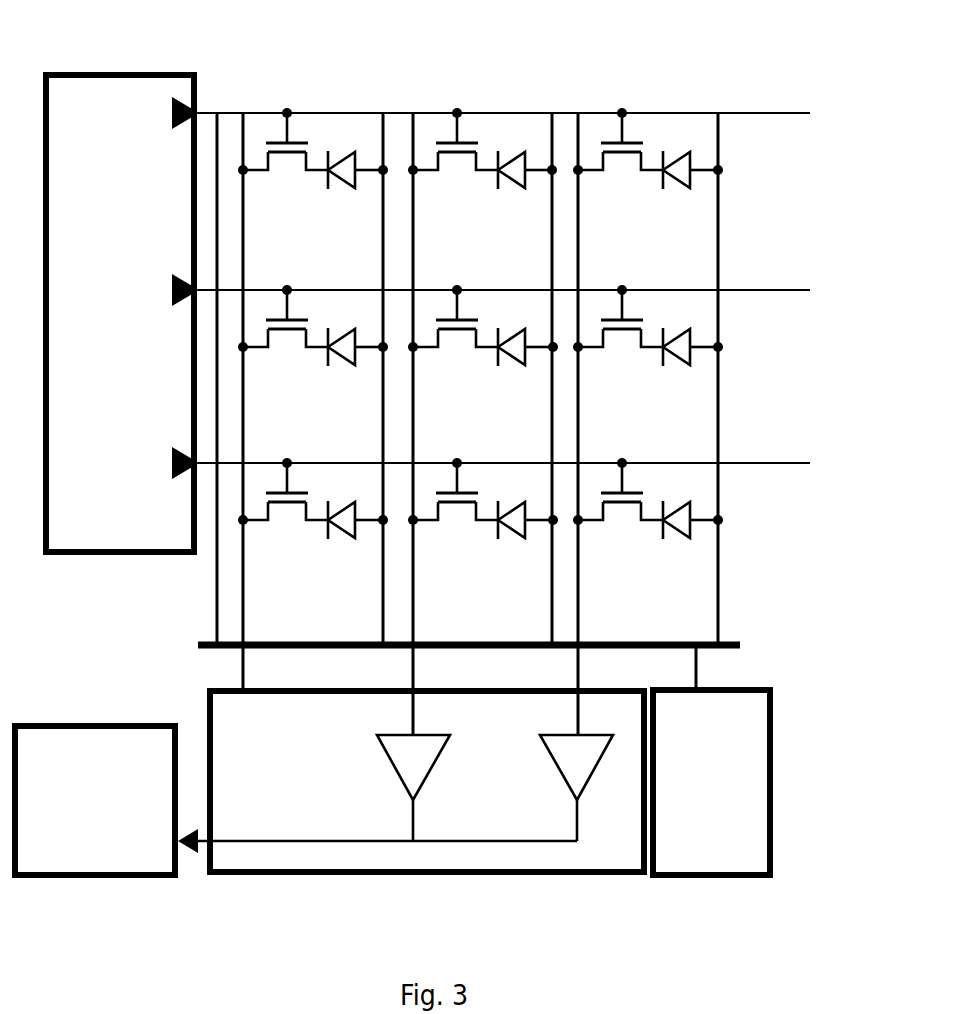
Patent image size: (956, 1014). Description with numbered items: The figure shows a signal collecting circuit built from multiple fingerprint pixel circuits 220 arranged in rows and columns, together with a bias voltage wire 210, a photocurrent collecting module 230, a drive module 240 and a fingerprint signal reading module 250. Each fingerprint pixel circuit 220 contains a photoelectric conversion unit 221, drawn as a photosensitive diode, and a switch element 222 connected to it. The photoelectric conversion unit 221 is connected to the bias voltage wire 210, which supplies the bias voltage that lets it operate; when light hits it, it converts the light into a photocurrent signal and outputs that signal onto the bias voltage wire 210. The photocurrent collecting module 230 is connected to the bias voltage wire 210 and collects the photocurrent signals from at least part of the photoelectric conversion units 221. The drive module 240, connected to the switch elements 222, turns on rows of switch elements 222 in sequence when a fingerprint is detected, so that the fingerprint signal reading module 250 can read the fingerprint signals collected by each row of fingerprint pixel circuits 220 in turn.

The bias voltage wire 210 is at (745, 640).
The fingerprint pixel circuit 220 is at (655, 113).
The photoelectric conversion unit 221 is at (517, 133).
The switch element 222 is at (442, 132).
The photocurrent collecting module 230 is at (775, 723).
The drive module 240 is at (132, 541).
The fingerprint signal reading module 250 is at (525, 866).